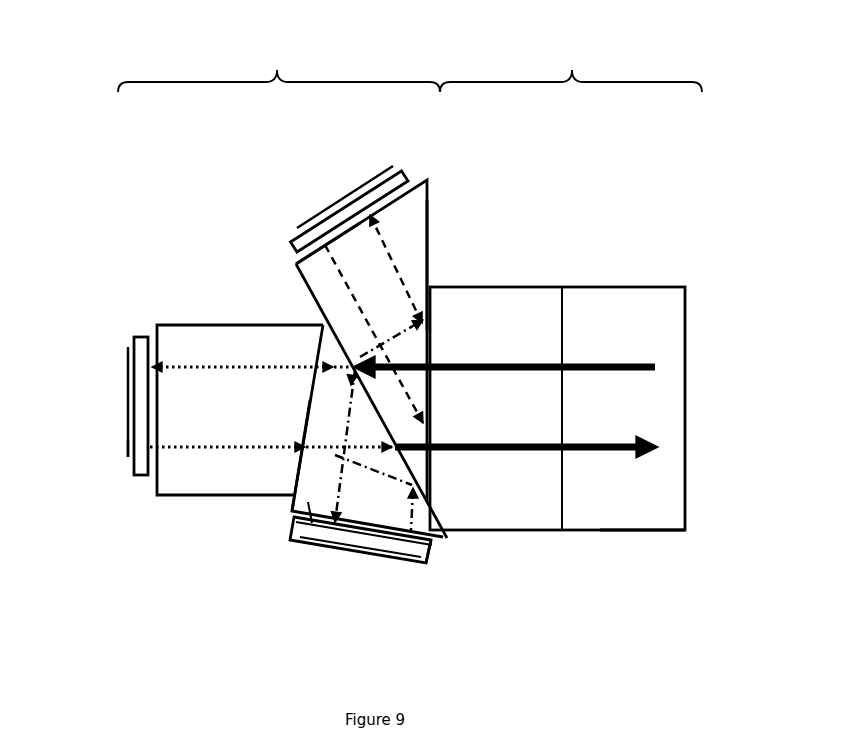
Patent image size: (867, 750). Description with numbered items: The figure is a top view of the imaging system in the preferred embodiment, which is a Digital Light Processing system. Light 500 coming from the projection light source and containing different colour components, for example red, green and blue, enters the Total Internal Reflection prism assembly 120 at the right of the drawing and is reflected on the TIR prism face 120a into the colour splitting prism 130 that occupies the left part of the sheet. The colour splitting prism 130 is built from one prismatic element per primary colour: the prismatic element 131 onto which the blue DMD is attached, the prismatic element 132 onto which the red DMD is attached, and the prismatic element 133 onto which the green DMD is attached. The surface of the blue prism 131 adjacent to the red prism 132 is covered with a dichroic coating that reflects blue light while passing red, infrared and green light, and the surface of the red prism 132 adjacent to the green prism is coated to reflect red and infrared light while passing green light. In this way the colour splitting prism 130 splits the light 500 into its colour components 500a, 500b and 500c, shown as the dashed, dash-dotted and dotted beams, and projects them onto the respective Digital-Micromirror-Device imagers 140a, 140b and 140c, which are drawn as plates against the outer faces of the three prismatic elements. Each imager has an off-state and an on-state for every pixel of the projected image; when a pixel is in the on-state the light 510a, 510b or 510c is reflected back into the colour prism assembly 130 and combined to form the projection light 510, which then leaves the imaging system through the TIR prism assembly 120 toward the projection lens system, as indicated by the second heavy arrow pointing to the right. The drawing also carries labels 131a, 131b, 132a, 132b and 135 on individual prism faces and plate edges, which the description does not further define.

The colour splitting prism 130 is at (279, 70).
The TIR prism assembly 120 is at (566, 288).
The TIR prism face 120a is at (563, 310).
The projection light 510 is at (628, 530).
The prismatic element 131 is at (427, 180).
The first prism entrance face 131a is at (427, 212).
The first prism top face 131b is at (296, 265).
The prismatic element 132 is at (292, 537).
The second prism hypotenuse face 132a is at (447, 538).
The second prism side face 132b is at (300, 498).
The prismatic element 133 is at (240, 410).
The plate end 135 is at (430, 550).
The Digital-Micromirror-Device imager 140a is at (375, 181).
The Digital-Micromirror-Device imager 140b is at (367, 552).
The Digital-Micromirror-Device imager 140c is at (128, 418).
The on-state light 510a is at (342, 270).
The on-state light 510b is at (425, 560).
The on-state light 510c is at (177, 448).
The light 500 is at (605, 360).
The light component 500a is at (400, 273).
The light component 500b is at (305, 545).
The light component 500c is at (183, 365).